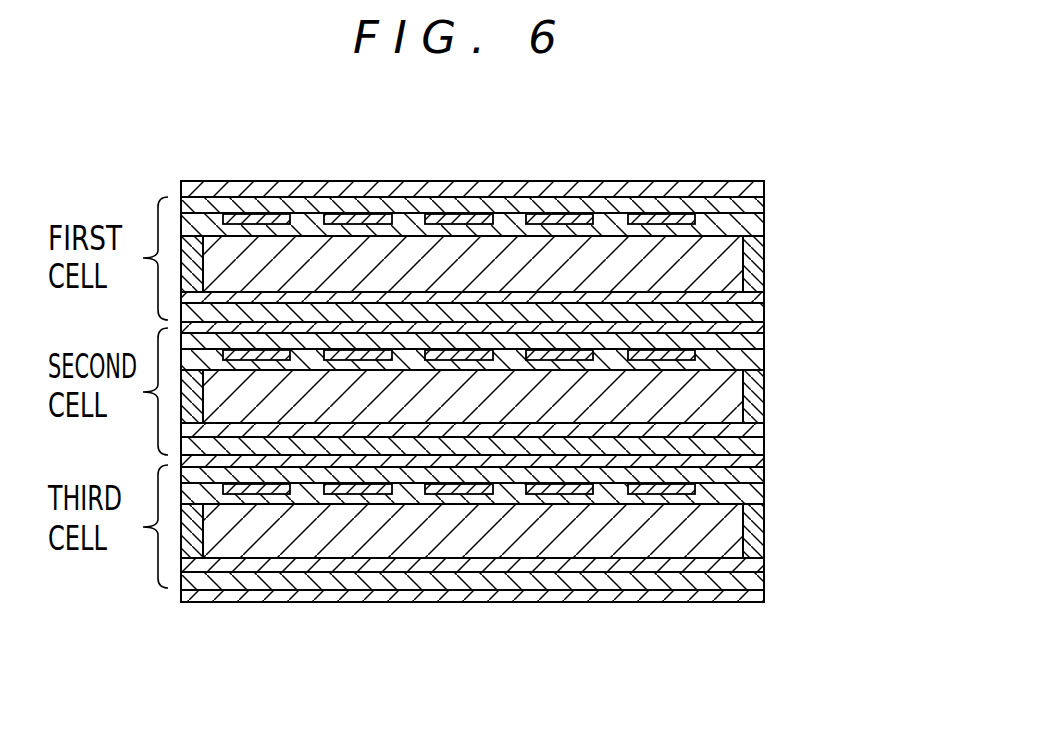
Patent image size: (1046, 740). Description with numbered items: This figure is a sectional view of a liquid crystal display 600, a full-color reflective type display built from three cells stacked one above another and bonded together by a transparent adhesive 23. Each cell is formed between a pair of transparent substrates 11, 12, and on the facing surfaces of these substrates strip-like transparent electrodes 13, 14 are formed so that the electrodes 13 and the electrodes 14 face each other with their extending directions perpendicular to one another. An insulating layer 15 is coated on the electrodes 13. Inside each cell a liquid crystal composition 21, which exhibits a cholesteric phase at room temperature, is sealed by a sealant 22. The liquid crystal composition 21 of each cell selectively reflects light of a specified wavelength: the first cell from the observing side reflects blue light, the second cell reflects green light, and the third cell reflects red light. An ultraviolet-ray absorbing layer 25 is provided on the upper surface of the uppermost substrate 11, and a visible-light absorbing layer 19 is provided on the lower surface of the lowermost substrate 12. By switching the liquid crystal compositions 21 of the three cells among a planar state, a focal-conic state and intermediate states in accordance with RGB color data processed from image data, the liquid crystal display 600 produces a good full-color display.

The liquid crystal display 600 is at (738, 135).
The ultraviolet-ray absorbing layer 25 is at (240, 181).
The liquid crystal composition 21 is at (560, 248).
The transparent adhesive 23 is at (765, 323).
The transparent substrate 11 is at (765, 470).
The insulating layer 15 is at (765, 497).
The transparent electrode 14 is at (765, 558).
The transparent substrate 12 is at (767, 576).
The visible-light absorbing layer 19 is at (358, 602).
The transparent electrode 13 is at (557, 490).
The sealant 22 is at (742, 540).